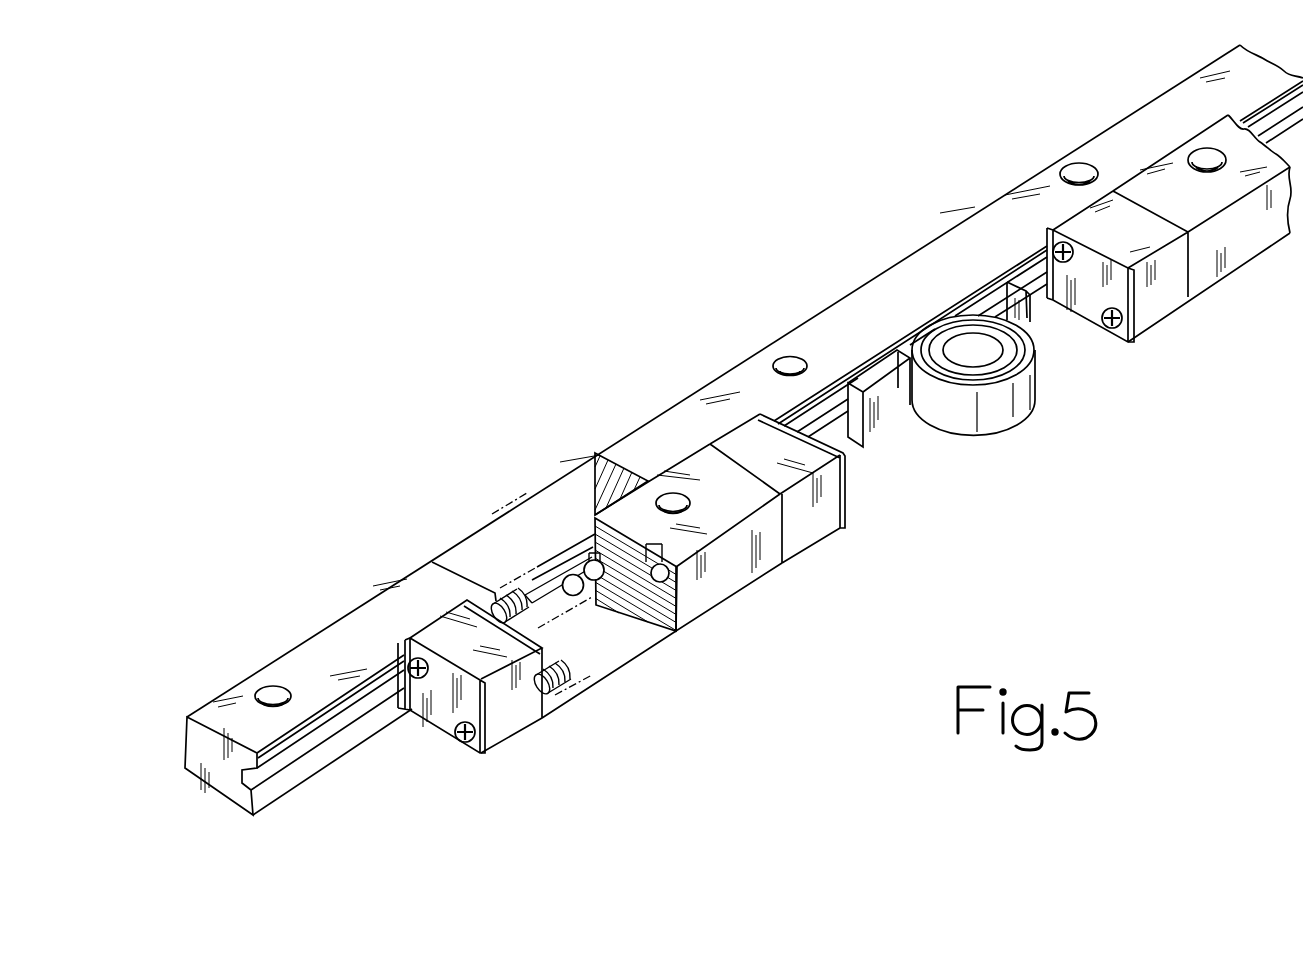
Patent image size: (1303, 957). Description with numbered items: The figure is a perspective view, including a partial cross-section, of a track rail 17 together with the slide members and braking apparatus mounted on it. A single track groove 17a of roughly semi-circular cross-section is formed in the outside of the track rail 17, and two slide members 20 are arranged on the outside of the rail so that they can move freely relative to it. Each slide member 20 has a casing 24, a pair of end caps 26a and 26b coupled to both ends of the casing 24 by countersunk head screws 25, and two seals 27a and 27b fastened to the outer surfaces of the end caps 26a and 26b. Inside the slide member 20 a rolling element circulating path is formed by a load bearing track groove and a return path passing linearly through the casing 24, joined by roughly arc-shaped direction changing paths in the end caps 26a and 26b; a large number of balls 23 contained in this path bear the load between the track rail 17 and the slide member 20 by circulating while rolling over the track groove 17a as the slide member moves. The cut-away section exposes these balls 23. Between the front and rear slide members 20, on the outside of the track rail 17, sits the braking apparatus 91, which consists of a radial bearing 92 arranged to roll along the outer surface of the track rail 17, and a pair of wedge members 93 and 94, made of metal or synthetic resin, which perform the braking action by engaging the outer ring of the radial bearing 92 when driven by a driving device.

The track rail 17 is at (744, 472).
The track groove 17a is at (283, 760).
The slide member 20 is at (826, 490).
The balls 23 is at (578, 594).
The casing 24 is at (720, 582).
The countersunk head screws 25 is at (419, 682).
The end cap 26a is at (515, 713).
The end cap 26b is at (813, 522).
The seal 27a is at (484, 716).
The seal 27b is at (848, 500).
The braking apparatus 91 is at (1037, 422).
The radial bearing 92 is at (1007, 418).
The wedge member 93 is at (868, 378).
The wedge member 94 is at (1007, 282).